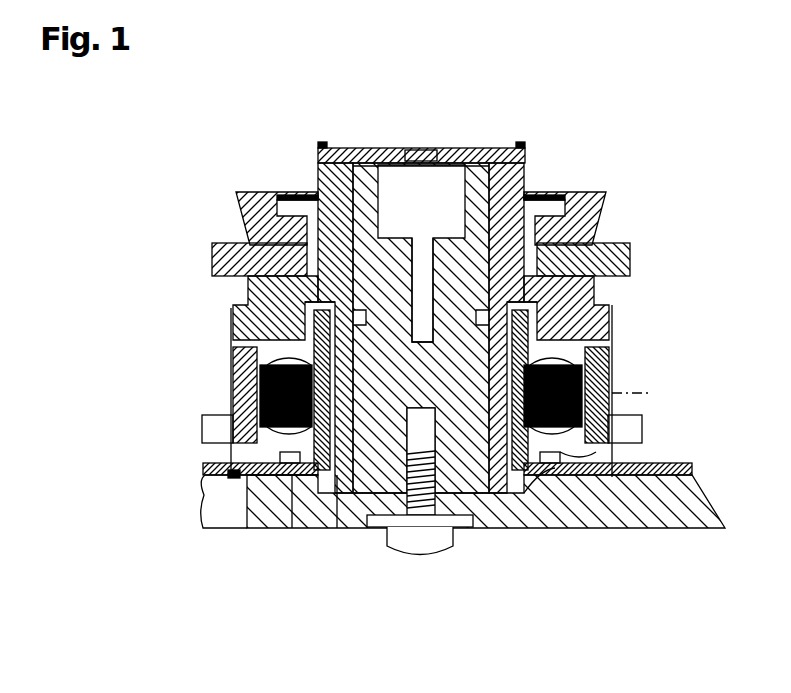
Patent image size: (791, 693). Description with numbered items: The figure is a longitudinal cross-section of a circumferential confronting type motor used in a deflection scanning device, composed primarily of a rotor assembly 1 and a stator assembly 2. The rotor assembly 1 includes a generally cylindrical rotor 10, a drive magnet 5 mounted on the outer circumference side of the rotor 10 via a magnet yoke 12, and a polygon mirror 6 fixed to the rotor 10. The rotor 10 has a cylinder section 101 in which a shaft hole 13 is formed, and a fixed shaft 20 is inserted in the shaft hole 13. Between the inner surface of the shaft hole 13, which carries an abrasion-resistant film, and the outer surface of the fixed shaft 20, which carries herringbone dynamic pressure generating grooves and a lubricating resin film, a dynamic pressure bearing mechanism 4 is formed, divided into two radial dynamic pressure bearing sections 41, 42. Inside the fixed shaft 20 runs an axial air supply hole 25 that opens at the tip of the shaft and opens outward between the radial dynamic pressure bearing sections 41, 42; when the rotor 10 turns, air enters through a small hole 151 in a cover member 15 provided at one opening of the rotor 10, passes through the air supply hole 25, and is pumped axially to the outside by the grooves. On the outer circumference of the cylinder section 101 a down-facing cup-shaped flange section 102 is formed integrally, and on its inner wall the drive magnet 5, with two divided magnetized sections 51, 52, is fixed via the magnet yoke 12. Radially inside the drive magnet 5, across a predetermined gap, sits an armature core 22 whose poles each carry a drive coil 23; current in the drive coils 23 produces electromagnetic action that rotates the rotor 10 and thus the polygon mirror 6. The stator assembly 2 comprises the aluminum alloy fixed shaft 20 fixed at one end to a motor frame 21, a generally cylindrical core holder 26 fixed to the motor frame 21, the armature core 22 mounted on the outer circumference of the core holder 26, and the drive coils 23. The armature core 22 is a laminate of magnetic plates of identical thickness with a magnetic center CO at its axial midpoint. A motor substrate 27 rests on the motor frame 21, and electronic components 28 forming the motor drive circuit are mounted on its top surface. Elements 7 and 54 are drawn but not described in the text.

The rotor assembly 1 is at (227, 197).
The stator assembly 2 is at (227, 540).
The dynamic pressure bearing mechanism 4 is at (137, 288).
The drive magnet 5 is at (137, 350).
The polygon mirror 6 is at (621, 244).
The rotor yoke 7 is at (591, 193).
The rotor 10 is at (329, 187).
The magnet yoke 12 is at (206, 420).
The shaft hole 13 is at (499, 197).
The cover member 15 is at (389, 159).
The fixed shaft 20 is at (450, 480).
The motor frame 21 is at (640, 510).
The armature core 22 is at (612, 362).
The drive coil 23 is at (596, 452).
The air supply hole 25 is at (419, 247).
The core holder 26 is at (537, 480).
The motor substrate 27 is at (212, 483).
The electronic components 28 is at (292, 522).
The radial dynamic pressure bearing section 41 is at (248, 296).
The radial dynamic pressure bearing section 42 is at (258, 333).
The magnetized section 51 is at (262, 364).
The magnetized section 52 is at (240, 402).
The bobbin flange 54 is at (238, 395).
The cylinder section 101 is at (337, 527).
The flange section 102 is at (594, 300).
The small hole 151 is at (426, 160).
The magnetic center CO is at (648, 394).